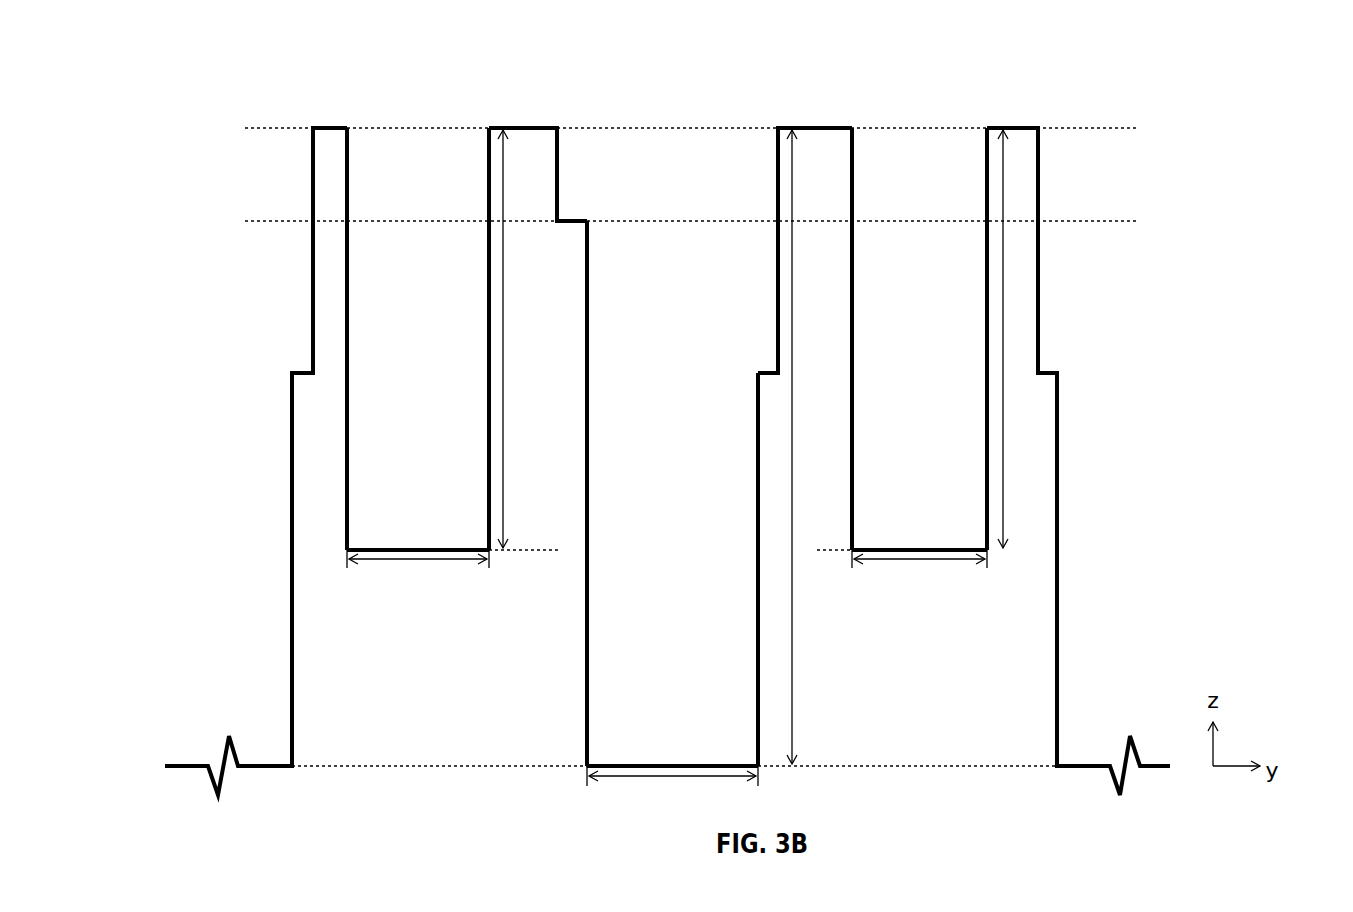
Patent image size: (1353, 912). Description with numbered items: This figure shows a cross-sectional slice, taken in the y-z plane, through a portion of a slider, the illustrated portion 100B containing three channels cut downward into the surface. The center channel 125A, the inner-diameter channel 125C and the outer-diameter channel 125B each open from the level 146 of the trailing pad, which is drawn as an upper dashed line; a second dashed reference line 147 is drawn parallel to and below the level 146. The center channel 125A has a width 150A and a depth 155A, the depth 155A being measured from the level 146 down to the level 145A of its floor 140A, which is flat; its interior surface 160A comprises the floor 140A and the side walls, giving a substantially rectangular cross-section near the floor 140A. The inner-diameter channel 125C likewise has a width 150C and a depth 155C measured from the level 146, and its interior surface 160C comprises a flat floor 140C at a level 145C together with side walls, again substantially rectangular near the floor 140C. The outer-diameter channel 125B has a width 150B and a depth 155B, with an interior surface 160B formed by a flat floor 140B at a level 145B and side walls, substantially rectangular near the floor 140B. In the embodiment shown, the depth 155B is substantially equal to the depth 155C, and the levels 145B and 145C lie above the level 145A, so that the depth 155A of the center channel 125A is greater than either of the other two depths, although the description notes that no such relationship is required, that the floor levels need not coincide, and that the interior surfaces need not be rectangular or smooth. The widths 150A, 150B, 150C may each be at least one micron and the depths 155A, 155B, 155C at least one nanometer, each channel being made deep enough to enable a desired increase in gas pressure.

The semiconductor structure 100B is at (156, 212).
The center channel 125A is at (683, 116).
The outer-diameter channel 125B is at (922, 116).
The inner-diameter channel 125C is at (420, 116).
The floor 140A is at (740, 762).
The floor 140B is at (968, 548).
The floor 140C is at (477, 548).
The level 145A is at (910, 768).
The level 145B is at (817, 553).
The level 145C is at (532, 552).
The level 146 is at (1097, 130).
The intermediate plane 147 is at (1097, 222).
The width 150A is at (632, 780).
The width 150B is at (950, 565).
The width 150C is at (377, 562).
The depth 155A is at (795, 722).
The depth 155B is at (1005, 335).
The depth 155C is at (505, 318).
The interior surface 160A is at (557, 168).
The interior surface 160B is at (868, 548).
The interior surface 160C is at (370, 548).